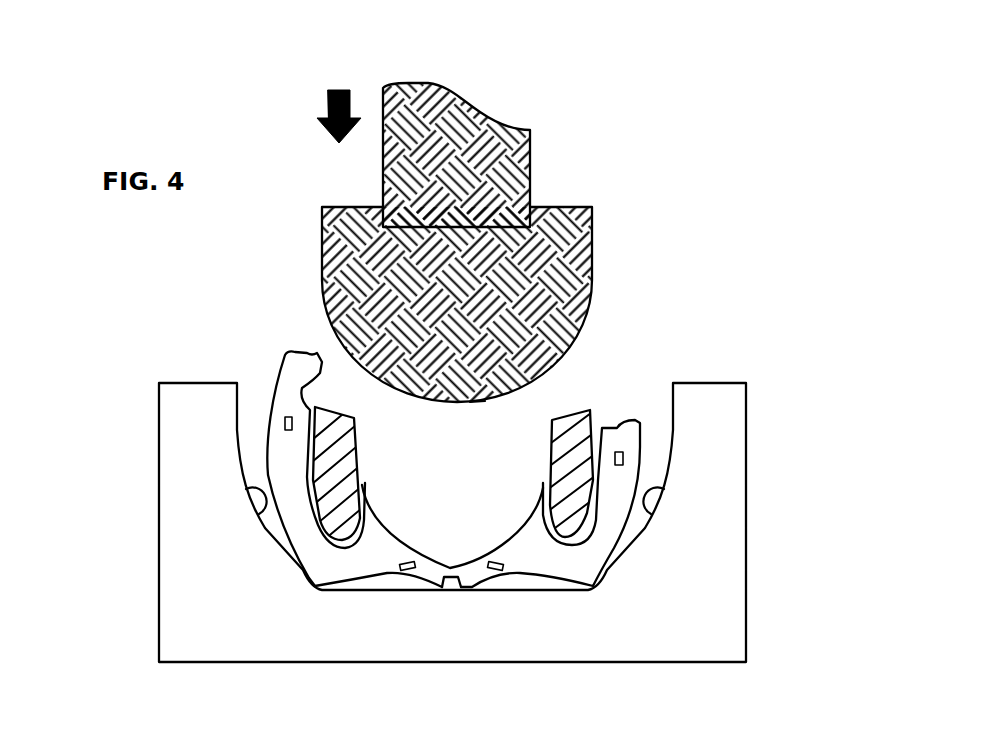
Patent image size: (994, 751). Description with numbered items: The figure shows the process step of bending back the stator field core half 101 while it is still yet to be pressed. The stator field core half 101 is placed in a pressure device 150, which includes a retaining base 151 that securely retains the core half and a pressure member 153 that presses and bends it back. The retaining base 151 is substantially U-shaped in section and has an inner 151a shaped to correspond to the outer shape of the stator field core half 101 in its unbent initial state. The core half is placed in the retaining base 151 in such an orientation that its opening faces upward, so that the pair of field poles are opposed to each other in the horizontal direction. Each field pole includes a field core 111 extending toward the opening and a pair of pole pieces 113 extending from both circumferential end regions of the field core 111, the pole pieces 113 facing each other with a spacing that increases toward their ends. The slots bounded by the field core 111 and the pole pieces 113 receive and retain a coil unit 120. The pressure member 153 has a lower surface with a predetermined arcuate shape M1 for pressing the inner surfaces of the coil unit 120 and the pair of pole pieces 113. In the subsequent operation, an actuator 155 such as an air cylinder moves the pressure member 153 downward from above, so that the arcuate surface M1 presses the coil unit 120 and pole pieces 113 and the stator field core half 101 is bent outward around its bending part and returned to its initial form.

The pressure device 150 is at (645, 178).
The retaining base 151 is at (746, 553).
The inner 151a is at (246, 492).
The pressure member 153 is at (594, 237).
The actuator 155 is at (531, 145).
The arcuate shape M1 is at (477, 403).
The stator field core half 101 is at (284, 362).
The field core 111 is at (427, 580).
The pole pieces 113 is at (369, 501).
The coil unit 120 is at (355, 437).